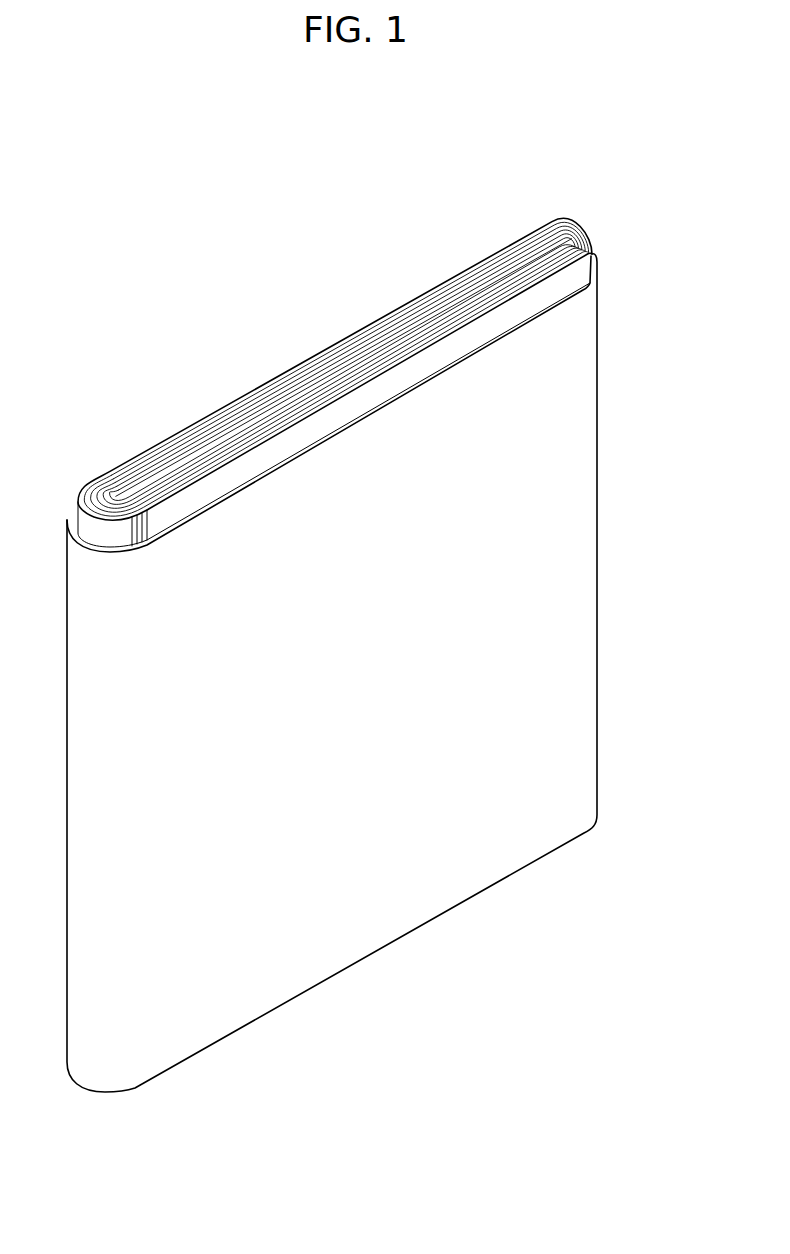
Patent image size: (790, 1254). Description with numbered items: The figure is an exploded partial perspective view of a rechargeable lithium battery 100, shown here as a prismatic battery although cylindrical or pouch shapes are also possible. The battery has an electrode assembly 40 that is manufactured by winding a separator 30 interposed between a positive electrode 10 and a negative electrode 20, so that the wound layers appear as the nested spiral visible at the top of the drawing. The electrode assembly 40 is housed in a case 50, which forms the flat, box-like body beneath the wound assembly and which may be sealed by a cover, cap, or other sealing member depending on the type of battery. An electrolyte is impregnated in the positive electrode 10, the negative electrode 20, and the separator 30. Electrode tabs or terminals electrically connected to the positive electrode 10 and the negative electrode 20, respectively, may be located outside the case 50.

The rechargeable lithium battery 100 is at (326, 152).
The positive electrode 10 is at (599, 262).
The negative electrode 20 is at (588, 250).
The separator 30 is at (588, 240).
The electrode assembly 40 is at (292, 345).
The case 50 is at (582, 530).